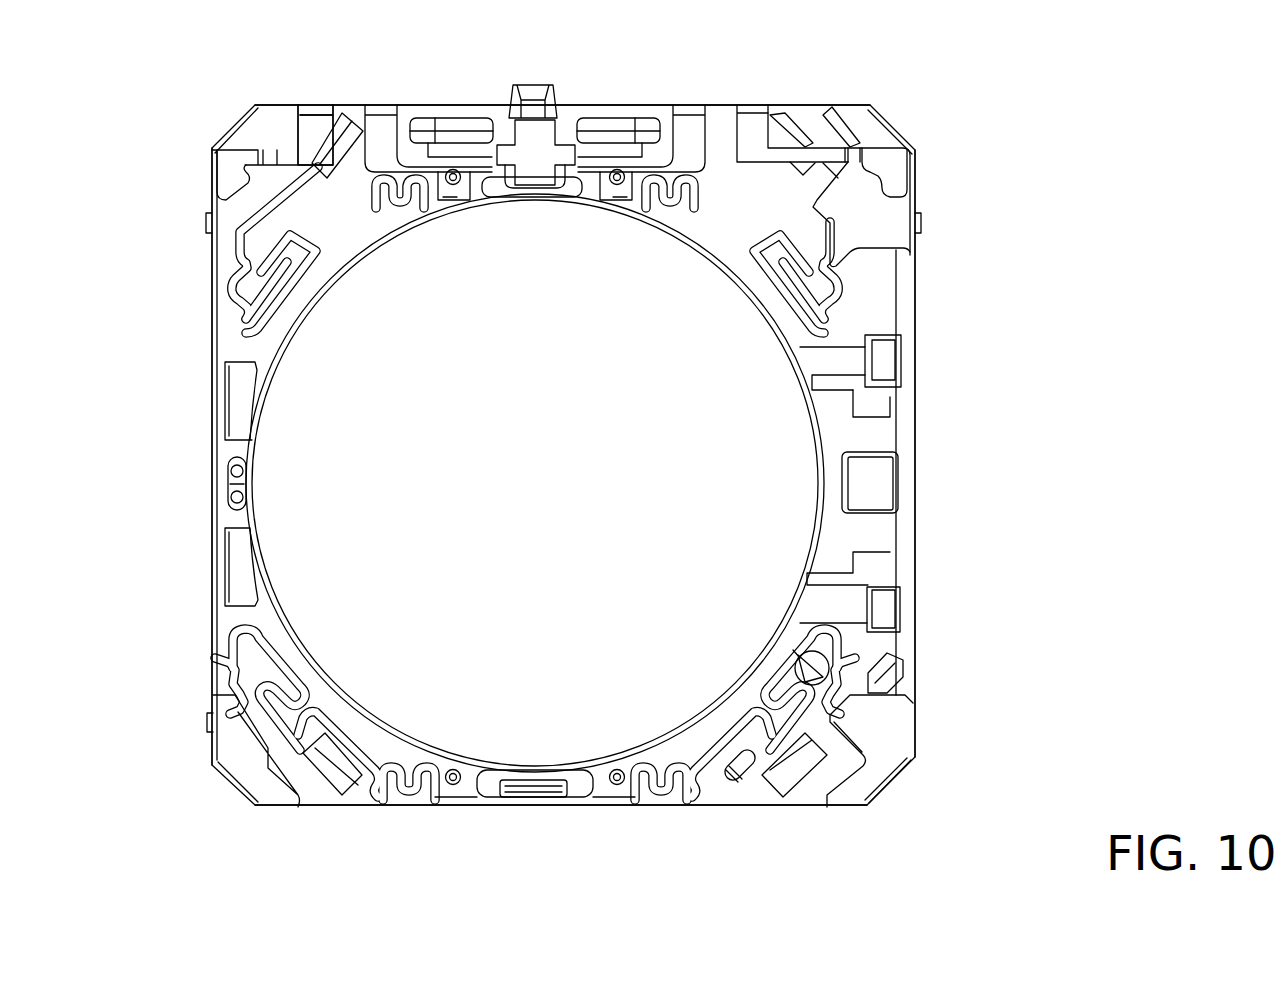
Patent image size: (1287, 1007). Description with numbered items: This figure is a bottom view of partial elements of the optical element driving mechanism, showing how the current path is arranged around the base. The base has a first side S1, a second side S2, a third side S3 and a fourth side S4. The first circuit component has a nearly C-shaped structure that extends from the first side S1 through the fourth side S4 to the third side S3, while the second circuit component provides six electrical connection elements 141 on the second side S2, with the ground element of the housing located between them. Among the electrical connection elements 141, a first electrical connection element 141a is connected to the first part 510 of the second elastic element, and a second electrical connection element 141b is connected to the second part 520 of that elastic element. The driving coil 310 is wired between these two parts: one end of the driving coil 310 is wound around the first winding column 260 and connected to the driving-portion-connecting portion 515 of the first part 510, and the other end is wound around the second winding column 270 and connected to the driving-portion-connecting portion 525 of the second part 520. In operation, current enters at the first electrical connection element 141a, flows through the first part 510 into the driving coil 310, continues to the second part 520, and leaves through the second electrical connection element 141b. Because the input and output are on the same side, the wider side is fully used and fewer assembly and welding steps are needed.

The electrical connection elements 141 is at (750, 123).
The first electrical connection element 141a is at (790, 102).
The second electrical connection element 141b is at (303, 104).
The first side S1 is at (916, 501).
The second side S2 is at (318, 123).
The third side S3 is at (215, 456).
The fourth side S4 is at (560, 808).
The first part 510 is at (890, 218).
The second part 520 is at (226, 224).
The first winding column 260 is at (887, 353).
The driving coil 310 is at (897, 360).
The driving-portion-connecting portion 515 is at (887, 398).
The driving-portion-connecting portion 525 is at (877, 565).
The second winding column 270 is at (887, 615).